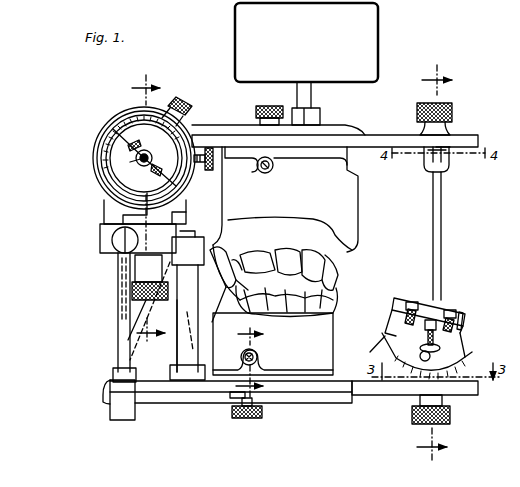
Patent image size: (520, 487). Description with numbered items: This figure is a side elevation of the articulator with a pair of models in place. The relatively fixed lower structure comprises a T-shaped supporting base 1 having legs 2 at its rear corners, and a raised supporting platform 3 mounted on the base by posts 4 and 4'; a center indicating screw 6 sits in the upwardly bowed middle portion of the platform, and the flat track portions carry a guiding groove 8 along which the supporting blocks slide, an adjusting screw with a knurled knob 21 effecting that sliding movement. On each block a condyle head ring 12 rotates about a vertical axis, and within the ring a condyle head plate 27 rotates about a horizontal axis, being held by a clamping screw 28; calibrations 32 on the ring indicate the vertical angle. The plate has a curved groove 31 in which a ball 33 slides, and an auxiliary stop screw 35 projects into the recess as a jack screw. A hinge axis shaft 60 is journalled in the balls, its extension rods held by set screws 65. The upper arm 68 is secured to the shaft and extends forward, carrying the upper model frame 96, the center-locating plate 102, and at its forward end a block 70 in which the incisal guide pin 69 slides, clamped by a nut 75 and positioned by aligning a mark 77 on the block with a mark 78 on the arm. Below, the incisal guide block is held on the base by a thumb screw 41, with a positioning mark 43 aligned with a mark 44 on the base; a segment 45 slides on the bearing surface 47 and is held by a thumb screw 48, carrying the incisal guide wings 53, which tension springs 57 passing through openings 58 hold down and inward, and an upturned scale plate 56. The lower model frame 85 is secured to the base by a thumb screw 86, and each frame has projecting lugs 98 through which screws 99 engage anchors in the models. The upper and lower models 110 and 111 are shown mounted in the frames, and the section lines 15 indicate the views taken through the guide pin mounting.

The supporting base 1 is at (363, 398).
The legs 2 is at (120, 400).
The supporting platform 3 is at (168, 243).
The post 4 is at (163, 336).
The post 4' is at (107, 317).
The center indicating screw 6 is at (249, 357).
The guiding groove 8 is at (148, 206).
The condyle head ring 12 is at (97, 178).
The section line 15 is at (434, 263).
The knurled knob 21 is at (112, 241).
The condyle head plate 27 is at (136, 168).
The clamping screw 28 is at (182, 97).
The groove 31 is at (131, 152).
The calibrations 32 is at (103, 128).
The ball 33 is at (140, 158).
The auxiliary stop screw 35 is at (212, 146).
The thumb screw 41 is at (392, 398).
The positioning mark 43 is at (436, 372).
The mark 44 is at (460, 398).
The segment 45 is at (447, 352).
The bearing surface 47 is at (470, 354).
The thumb screw 48 is at (421, 353).
The incisal guide wings 53 is at (398, 300).
The scale plate 56 is at (463, 318).
The coiled tension spring 57 is at (396, 320).
The opening 58 is at (386, 340).
The hinge axis shaft 60 is at (153, 146).
The set screw 65 is at (160, 172).
The upper arm 68 is at (350, 142).
The incisal guide pin 69 is at (442, 231).
The block 70 is at (450, 160).
The nut 75 is at (451, 108).
The positioning mark 77 is at (430, 158).
The mark 78 is at (438, 146).
The lower model frame 85 is at (318, 396).
The thumb screw 86 is at (250, 420).
The upper model frame 96 is at (330, 158).
The projecting lugs 98 is at (258, 172).
The screws 99 is at (262, 354).
The center-locating plate 102 is at (306, 64).
The upper cast 110 is at (282, 249).
The lower member 111 is at (273, 344).